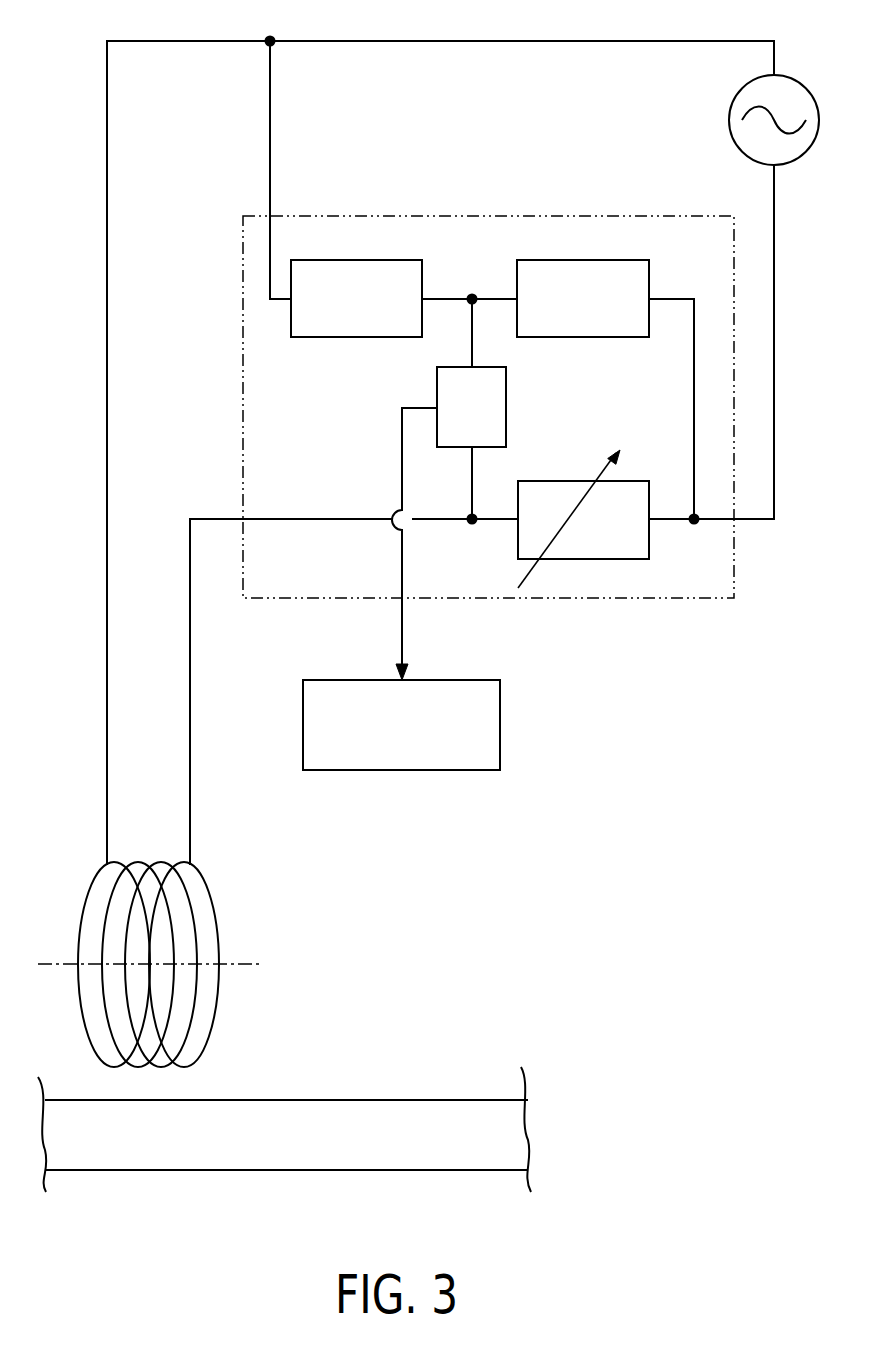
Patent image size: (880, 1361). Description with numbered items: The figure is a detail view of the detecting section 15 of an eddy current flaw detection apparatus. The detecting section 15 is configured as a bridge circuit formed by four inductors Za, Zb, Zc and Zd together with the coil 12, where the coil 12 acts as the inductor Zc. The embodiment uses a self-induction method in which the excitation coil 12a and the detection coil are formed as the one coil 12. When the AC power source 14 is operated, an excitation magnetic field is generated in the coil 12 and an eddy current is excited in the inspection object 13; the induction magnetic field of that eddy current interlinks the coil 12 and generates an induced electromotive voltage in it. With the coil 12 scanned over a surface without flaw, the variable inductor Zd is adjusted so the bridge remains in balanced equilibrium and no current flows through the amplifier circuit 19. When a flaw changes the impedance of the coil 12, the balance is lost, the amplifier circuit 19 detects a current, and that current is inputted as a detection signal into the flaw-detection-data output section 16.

The AC power source 14 is at (728, 118).
The detecting section 15 is at (488, 216).
The amplifier circuit 19 is at (507, 409).
The flaw-detection-data output section 16 is at (500, 725).
The coil 12 is at (218, 917).
The excitation coil 12a is at (237, 967).
The inspection object 13 is at (441, 1103).